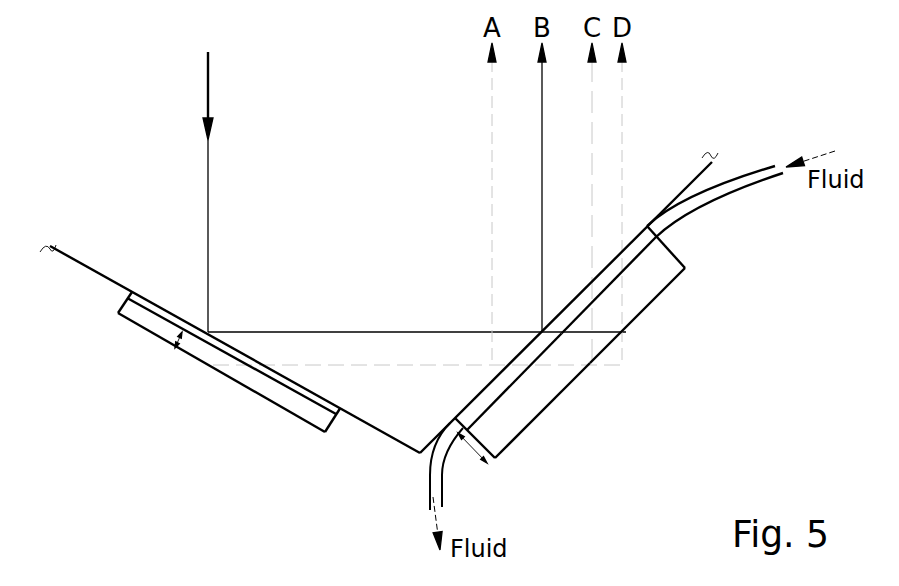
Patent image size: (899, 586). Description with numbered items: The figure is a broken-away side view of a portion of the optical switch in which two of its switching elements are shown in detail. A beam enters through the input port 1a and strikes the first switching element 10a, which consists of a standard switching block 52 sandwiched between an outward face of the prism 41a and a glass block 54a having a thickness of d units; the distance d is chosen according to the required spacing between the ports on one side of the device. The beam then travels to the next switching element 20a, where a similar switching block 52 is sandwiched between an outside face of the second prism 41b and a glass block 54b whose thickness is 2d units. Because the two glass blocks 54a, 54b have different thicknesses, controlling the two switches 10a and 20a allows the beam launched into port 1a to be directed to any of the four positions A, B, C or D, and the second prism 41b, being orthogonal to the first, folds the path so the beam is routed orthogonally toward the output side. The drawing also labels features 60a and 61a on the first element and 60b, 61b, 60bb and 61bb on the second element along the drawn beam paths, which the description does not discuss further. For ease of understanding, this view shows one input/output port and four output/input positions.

The input port 1a is at (265, 192).
The switching element 10a is at (192, 409).
The switching element 20a is at (678, 362).
The prism 41a is at (375, 475).
The second prism 41b is at (645, 279).
The switching block 52 is at (415, 251).
The glass block 54a is at (100, 372).
The glass block 54b is at (724, 247).
The front reflecting surface of first element 60a is at (230, 292).
The rear reflecting surface of first element 61a is at (221, 394).
The front reflecting surface of second element (first region) 60b is at (547, 392).
The rear reflecting surface of second element (first region) 61b is at (551, 424).
The front reflecting surface of second element (second region) 60bb is at (683, 285).
The rear reflecting surface of second element (second region) 61bb is at (649, 360).
The glass block thickness d is at (173, 342).
The double glass block thickness 2d is at (467, 458).